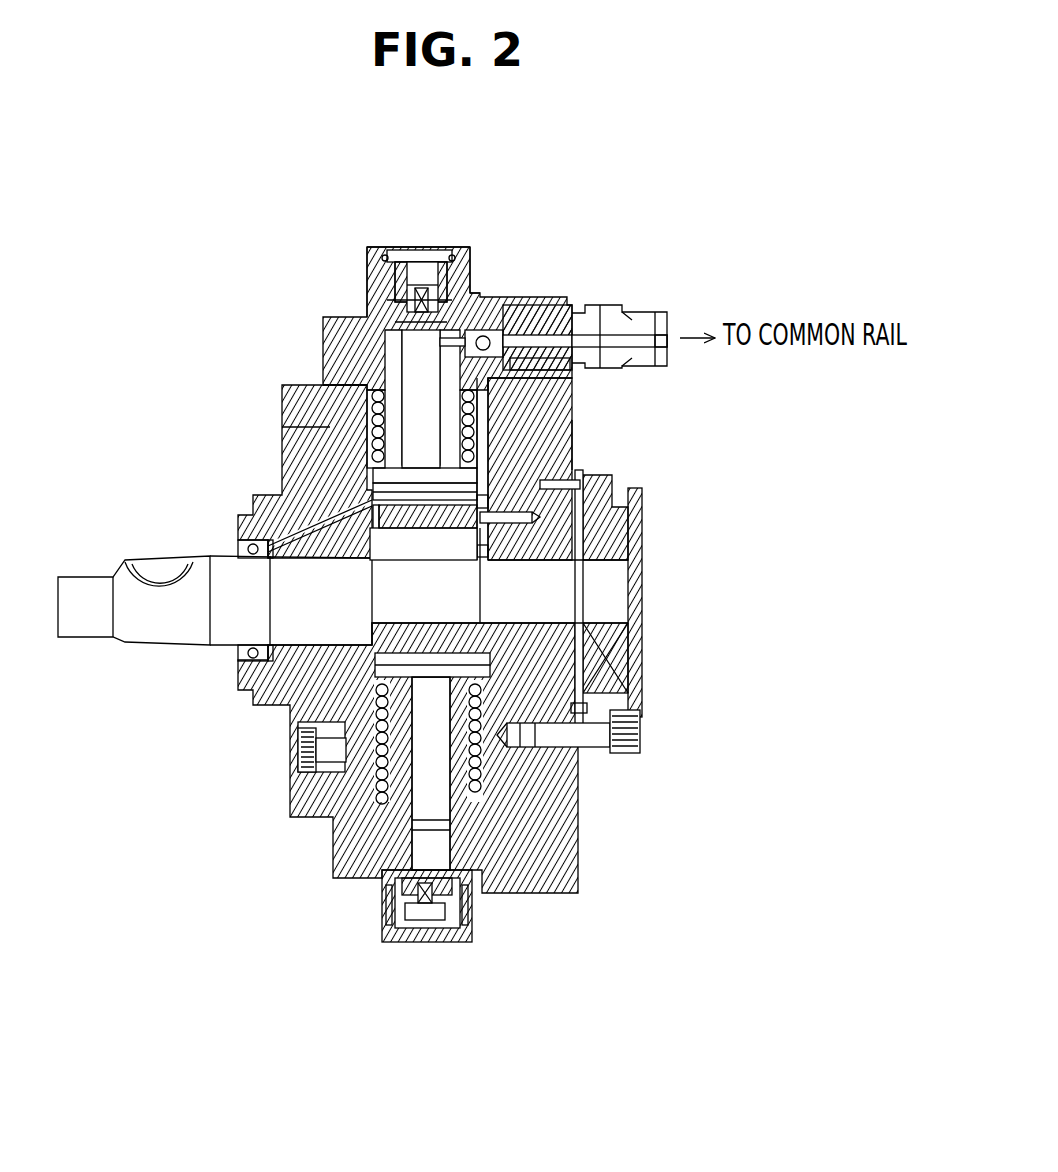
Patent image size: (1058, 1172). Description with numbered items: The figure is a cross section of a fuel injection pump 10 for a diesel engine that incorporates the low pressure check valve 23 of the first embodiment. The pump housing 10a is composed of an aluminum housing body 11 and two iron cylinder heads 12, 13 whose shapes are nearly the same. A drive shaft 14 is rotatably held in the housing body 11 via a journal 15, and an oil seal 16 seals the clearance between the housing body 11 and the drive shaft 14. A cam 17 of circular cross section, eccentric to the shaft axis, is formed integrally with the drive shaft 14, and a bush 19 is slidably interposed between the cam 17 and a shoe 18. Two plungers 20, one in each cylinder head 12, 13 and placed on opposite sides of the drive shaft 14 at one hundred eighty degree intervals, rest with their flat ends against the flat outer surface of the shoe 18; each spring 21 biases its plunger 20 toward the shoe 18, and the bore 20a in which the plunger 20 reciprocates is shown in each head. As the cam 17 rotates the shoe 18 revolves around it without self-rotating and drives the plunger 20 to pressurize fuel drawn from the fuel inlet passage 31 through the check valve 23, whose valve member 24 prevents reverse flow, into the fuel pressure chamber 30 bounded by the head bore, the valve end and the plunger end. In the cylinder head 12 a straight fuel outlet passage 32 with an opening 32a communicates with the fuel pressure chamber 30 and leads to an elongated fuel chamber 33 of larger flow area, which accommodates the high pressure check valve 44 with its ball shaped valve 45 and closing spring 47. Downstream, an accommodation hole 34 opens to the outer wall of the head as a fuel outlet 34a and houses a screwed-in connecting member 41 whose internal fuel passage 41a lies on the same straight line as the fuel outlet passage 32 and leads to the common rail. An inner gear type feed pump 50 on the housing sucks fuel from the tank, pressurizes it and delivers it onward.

The fuel injection pump 10 is at (650, 575).
The pump housing 10a is at (576, 440).
The housing body 11 is at (600, 493).
The cylinder head 12 is at (418, 455).
The cylinder head 13 is at (395, 878).
The drive shaft 14 is at (217, 558).
The journal 15 is at (375, 672).
The oil seal 16 is at (248, 656).
The cam 17 is at (262, 503).
The shoe 18 is at (312, 497).
The bush 19 is at (500, 463).
The plunger 20 is at (410, 372).
The cylinder bore 20a is at (368, 390).
The spring 21 is at (400, 440).
The check valve 23 is at (385, 310).
The valve member 24 is at (410, 288).
The fuel pressure chamber 30 is at (380, 300).
The fuel inlet passage 31 is at (440, 292).
The fuel outlet passage 32 is at (455, 300).
The opening 32a is at (400, 468).
The fuel chamber 33 is at (497, 325).
The accommodation hole 34 is at (572, 305).
The fuel outlet 34a is at (598, 366).
The connecting member 41 is at (620, 305).
The fuel passage 41a is at (658, 311).
The check valve 44 is at (470, 336).
The ball shaped valve 45 is at (500, 355).
The spring 47 is at (478, 300).
The feed pump 50 is at (648, 550).